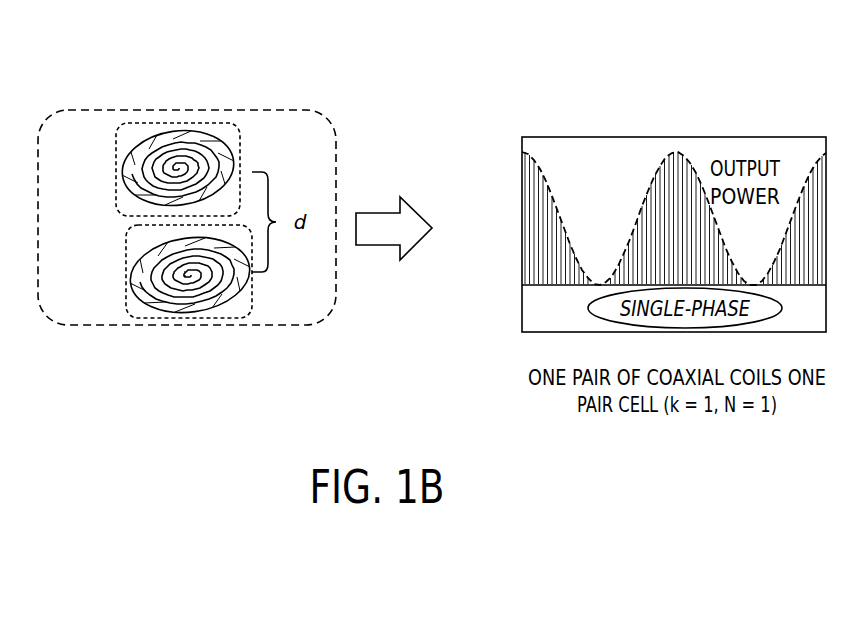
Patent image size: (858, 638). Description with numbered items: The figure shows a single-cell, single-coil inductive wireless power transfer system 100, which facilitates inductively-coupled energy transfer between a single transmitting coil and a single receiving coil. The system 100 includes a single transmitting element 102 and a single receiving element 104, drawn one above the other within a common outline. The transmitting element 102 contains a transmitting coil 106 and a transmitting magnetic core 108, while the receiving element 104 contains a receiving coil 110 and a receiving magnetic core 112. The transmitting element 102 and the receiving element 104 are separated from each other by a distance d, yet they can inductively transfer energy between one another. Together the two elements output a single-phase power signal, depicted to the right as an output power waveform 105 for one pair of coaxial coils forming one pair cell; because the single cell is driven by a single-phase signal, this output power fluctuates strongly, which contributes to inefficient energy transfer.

The single-cell power transfer system 100 is at (118, 110).
The transmitting element 102 is at (168, 123).
The receiving element 104 is at (140, 325).
The output power waveform 105 is at (684, 140).
The transmitting coil 106 is at (218, 162).
The transmitting magnetic core 108 is at (178, 140).
The receiving coil 110 is at (160, 275).
The receiving magnetic core 112 is at (206, 306).